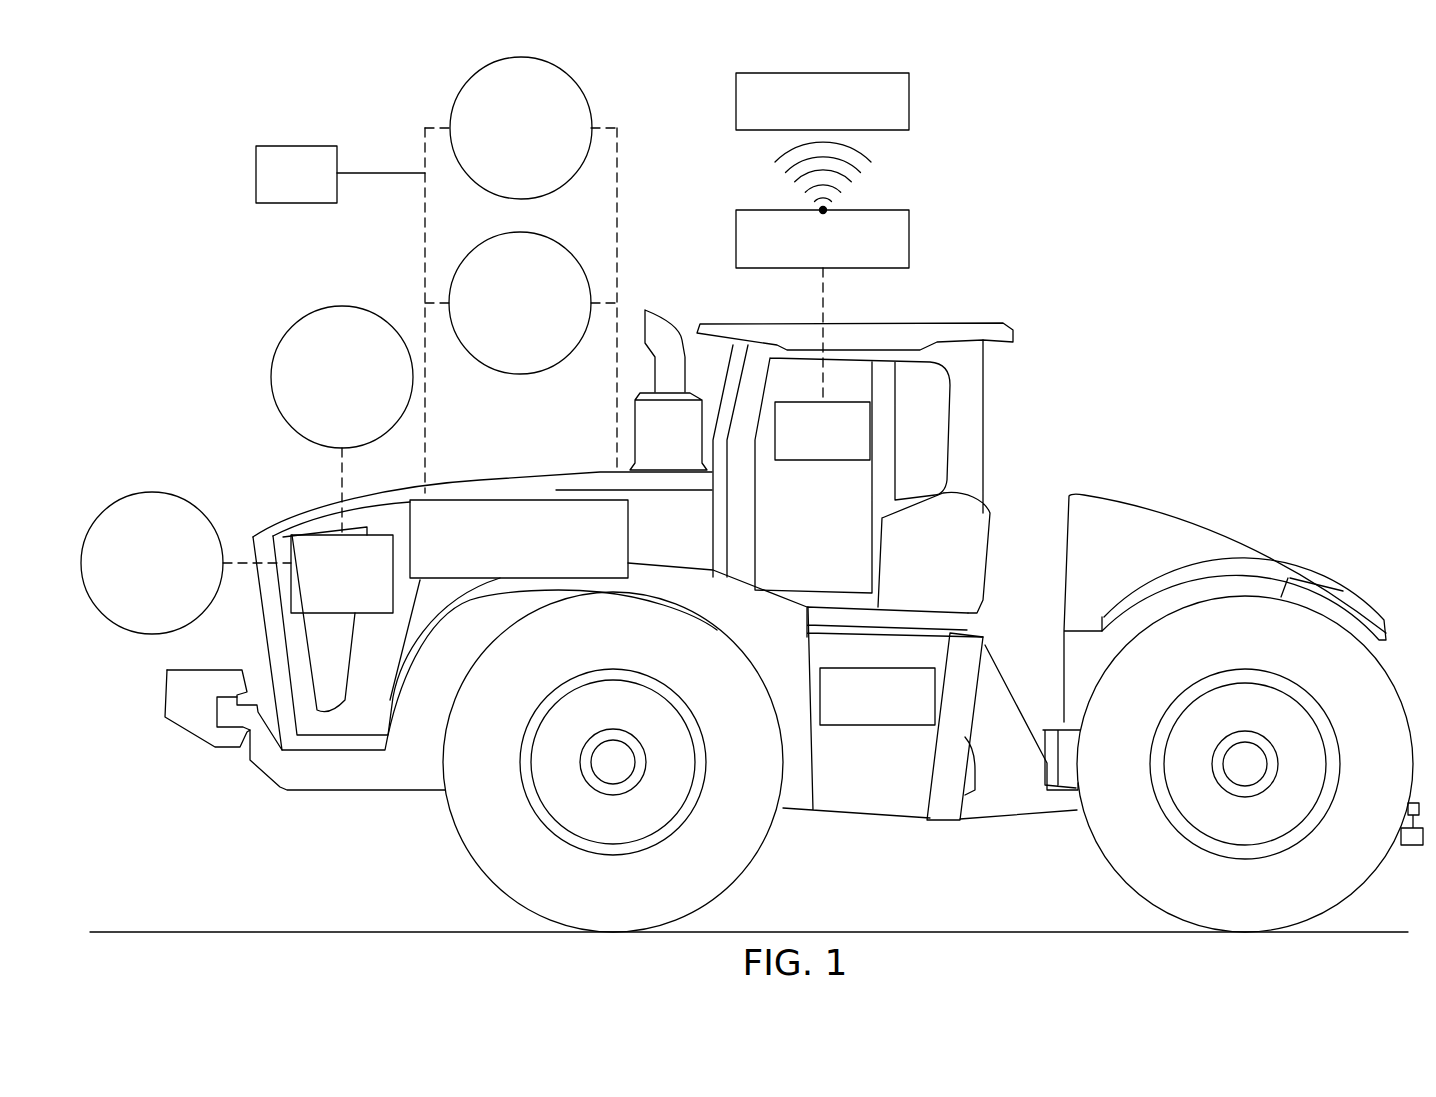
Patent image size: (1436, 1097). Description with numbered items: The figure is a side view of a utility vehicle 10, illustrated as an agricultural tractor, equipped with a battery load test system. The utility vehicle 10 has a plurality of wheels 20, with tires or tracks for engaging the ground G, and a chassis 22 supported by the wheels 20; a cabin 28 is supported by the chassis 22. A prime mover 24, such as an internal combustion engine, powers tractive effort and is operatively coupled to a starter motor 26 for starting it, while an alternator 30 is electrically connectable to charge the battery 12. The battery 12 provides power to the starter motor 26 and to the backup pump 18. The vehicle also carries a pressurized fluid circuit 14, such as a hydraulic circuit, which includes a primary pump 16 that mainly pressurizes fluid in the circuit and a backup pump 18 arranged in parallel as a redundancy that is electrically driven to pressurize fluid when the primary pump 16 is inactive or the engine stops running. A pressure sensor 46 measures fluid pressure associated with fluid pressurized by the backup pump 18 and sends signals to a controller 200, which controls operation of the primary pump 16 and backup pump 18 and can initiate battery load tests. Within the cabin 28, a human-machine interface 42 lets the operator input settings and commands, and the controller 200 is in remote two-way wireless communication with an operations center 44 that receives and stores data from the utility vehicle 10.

The utility vehicle 10 is at (1204, 254).
The battery 12 is at (862, 730).
The pressurized fluid circuit 14 is at (573, 498).
The primary pump 16 is at (495, 233).
The backup pump 18 is at (462, 87).
The wheels 20 is at (623, 768).
The chassis 22 is at (262, 598).
The prime mover 24 is at (330, 535).
The starter motor 26 is at (312, 308).
The cabin 28 is at (988, 407).
The alternator 30 is at (138, 492).
The human-machine interface 42 is at (808, 460).
The operations center 44 is at (909, 107).
The pressure sensor 46 is at (311, 185).
The controller 200 is at (909, 248).
The ground G is at (258, 932).